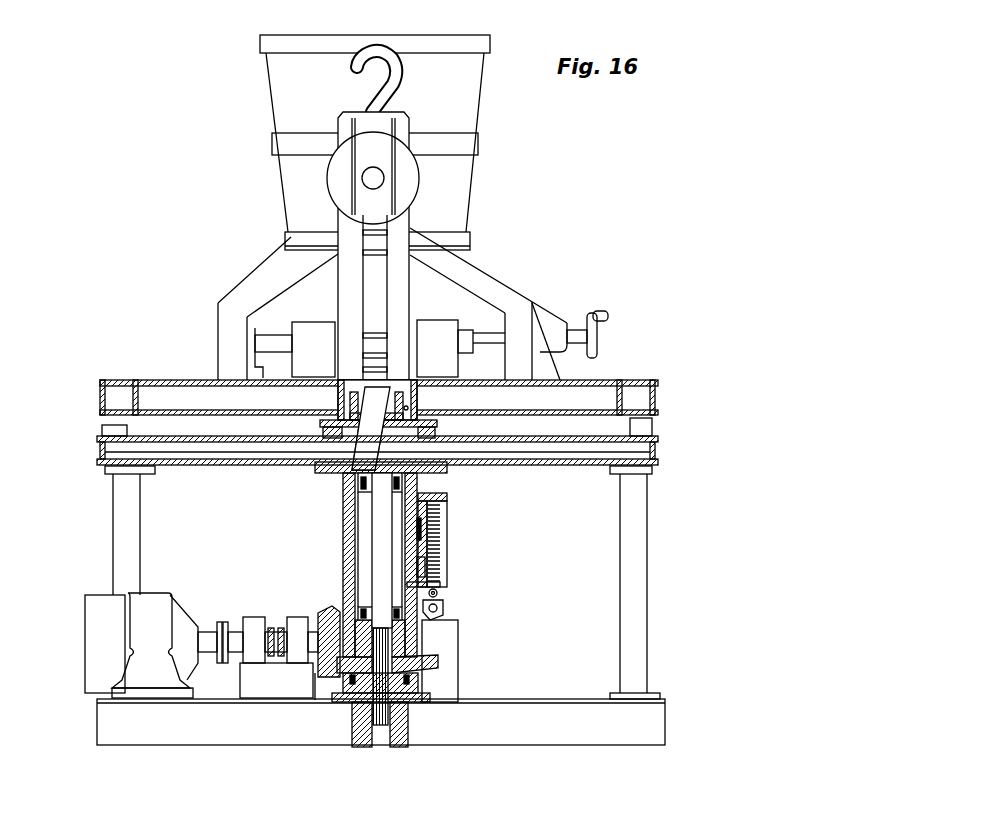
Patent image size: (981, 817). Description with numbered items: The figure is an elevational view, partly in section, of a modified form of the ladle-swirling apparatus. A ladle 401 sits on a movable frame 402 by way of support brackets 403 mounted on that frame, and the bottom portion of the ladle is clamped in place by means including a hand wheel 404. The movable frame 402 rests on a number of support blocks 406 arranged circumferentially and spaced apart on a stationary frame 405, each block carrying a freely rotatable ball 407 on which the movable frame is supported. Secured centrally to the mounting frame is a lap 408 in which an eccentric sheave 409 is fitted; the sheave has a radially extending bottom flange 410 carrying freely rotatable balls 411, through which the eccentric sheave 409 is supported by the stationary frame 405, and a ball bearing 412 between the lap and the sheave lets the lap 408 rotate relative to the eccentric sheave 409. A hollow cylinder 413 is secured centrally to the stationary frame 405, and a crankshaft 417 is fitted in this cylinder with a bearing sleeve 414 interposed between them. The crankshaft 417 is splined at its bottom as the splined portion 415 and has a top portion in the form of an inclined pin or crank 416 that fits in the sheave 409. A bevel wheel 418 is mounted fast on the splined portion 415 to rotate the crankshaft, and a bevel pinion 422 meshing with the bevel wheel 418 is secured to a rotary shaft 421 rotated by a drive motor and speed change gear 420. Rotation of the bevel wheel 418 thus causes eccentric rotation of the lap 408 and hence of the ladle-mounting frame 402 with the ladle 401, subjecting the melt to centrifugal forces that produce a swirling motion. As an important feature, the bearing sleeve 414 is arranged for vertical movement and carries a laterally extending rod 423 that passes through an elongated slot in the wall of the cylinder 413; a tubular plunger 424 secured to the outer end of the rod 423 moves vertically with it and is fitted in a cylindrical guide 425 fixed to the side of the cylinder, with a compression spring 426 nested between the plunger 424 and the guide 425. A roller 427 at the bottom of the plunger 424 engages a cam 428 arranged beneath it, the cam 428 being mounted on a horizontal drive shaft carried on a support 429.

The ladle 401 is at (477, 118).
The movable frame 402 is at (145, 380).
The support brackets 403 is at (225, 300).
The hand wheel 404 is at (600, 338).
The stationary frame 405 is at (214, 470).
The support blocks 406 is at (99, 462).
The freely rotatable balls 407 is at (99, 438).
The lap 408 is at (420, 408).
The eccentric sheave 409 is at (340, 405).
The bottom flange 410 is at (323, 431).
The freely rotatable balls 411 is at (340, 451).
The ball bearing 412 is at (430, 424).
The hollow cylinder 413 is at (345, 520).
The bearing sleeve 414 is at (360, 546).
The splined portion 415 is at (382, 728).
The inclined pin or crank 416 is at (368, 394).
The crankshaft 417 is at (372, 571).
The bevel wheel 418 is at (440, 661).
The drive motor and speed change gear 420 is at (197, 594).
The rotary shaft 421 is at (283, 617).
The bevel pinion 422 is at (326, 612).
The laterally extending rod 423 is at (440, 584).
The tubular plunger 424 is at (447, 561).
The cylindrical guide 425 is at (447, 497).
The compression spring 426 is at (447, 530).
The roller 427 is at (440, 597).
The cam 428 is at (445, 612).
The support 429 is at (458, 687).